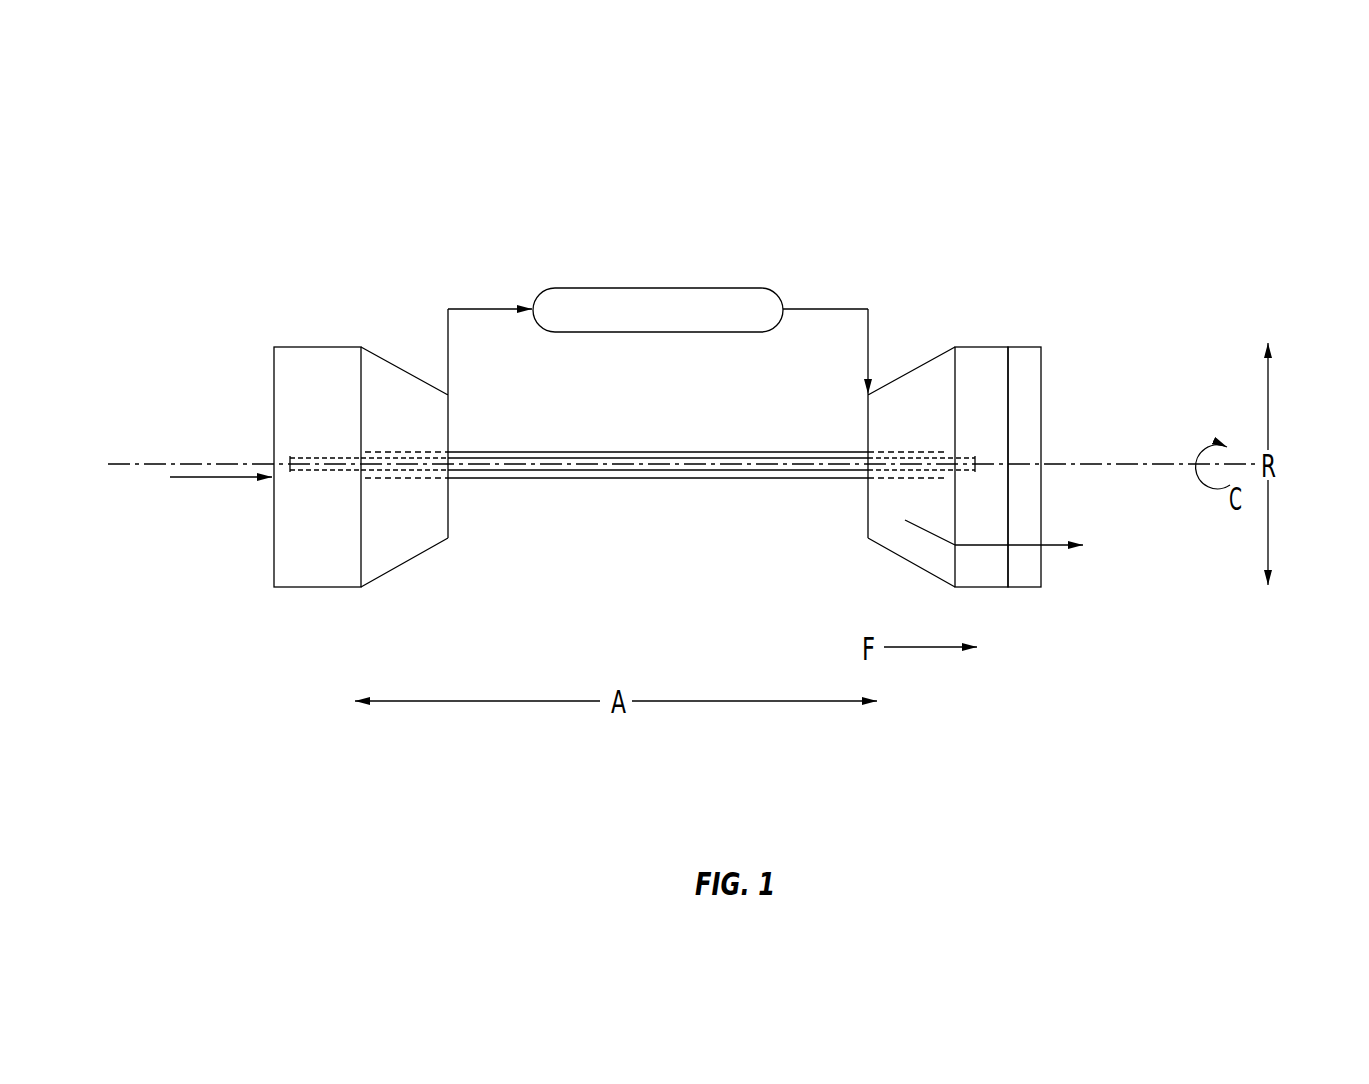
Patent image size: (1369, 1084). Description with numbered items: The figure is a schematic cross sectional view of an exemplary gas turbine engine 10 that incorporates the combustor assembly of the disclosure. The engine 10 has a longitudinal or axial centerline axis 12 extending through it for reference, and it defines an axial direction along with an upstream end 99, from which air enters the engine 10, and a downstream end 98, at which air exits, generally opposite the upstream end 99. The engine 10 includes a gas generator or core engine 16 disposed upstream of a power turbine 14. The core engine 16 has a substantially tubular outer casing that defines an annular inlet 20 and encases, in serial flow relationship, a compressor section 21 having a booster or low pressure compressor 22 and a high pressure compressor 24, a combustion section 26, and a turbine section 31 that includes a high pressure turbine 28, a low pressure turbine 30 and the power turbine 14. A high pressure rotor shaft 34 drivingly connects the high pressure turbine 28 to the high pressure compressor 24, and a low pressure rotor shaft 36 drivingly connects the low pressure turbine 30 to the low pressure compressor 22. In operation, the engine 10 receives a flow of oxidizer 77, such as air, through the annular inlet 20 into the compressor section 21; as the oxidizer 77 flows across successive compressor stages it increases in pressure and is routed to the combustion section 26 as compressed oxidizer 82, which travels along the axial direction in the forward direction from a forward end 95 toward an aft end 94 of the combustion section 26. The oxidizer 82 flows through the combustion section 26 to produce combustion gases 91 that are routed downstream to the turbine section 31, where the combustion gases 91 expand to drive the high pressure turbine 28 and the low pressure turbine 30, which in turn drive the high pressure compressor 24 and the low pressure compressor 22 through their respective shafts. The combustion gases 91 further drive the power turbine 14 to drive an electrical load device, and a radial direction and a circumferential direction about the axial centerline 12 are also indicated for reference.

The engine 10 is at (530, 180).
The axial centerline axis 12 is at (1108, 464).
The power turbine 14 is at (1028, 347).
The core engine 16 is at (836, 217).
The annular inlet 20 is at (253, 563).
The compressor section 21 is at (357, 310).
The low pressure compressor 22 is at (290, 347).
The high pressure compressor 24 is at (390, 363).
The combustion section 26 is at (660, 288).
The high pressure turbine 28 is at (920, 365).
The low pressure turbine 30 is at (980, 347).
The turbine section 31 is at (982, 305).
The high pressure rotor shaft 34 is at (775, 470).
The low pressure rotor shaft 36 is at (313, 458).
The flow of oxidizer 77 is at (205, 476).
The compressed oxidizer 82 is at (477, 309).
The combustion gases 91 is at (815, 309).
The aft end 94 is at (1086, 534).
The forward end 95 is at (243, 534).
The downstream end 98 is at (1366, 479).
The upstream end 99 is at (68, 478).